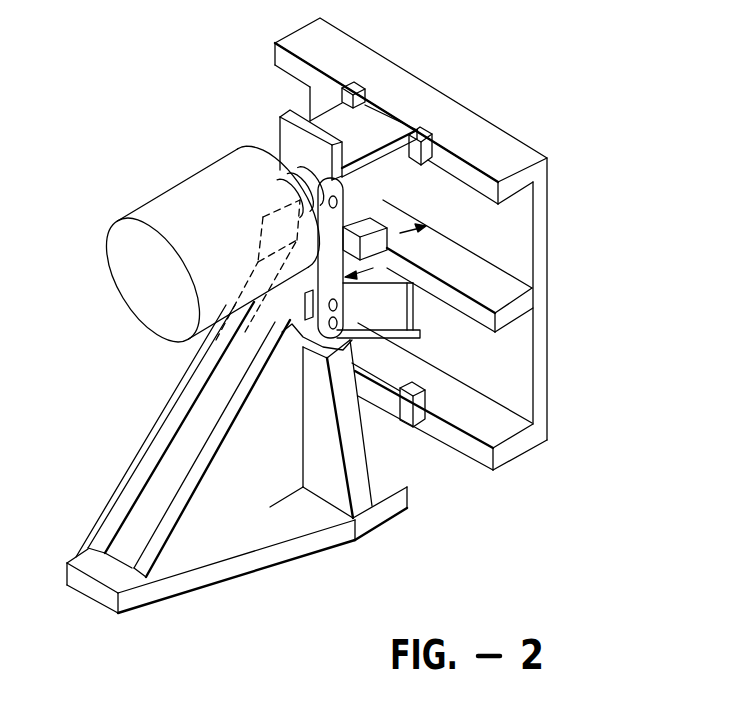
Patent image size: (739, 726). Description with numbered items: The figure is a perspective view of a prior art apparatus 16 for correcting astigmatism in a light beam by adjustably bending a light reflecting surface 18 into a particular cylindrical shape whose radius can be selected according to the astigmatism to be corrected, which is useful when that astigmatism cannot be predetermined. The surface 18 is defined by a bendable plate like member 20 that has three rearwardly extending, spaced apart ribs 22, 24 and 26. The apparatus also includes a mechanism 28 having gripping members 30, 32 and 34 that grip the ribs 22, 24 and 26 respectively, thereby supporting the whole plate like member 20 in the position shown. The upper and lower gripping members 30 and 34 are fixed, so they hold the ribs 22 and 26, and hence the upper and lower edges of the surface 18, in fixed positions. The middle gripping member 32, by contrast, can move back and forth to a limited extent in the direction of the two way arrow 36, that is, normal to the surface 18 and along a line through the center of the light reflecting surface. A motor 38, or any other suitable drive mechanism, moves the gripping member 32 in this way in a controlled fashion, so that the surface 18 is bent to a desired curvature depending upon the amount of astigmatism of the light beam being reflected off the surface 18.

The apparatus 16 is at (195, 141).
The light reflecting surface 18 is at (542, 390).
The plate like member 20 is at (532, 436).
The rib 22 is at (466, 172).
The rib 24 is at (472, 300).
The rib 26 is at (466, 445).
The mechanism 28 is at (256, 571).
The gripping member 30 is at (381, 118).
The gripping member 32 is at (387, 270).
The gripping member 34 is at (418, 428).
The two way arrow 36 is at (399, 232).
The motor 38 is at (132, 290).